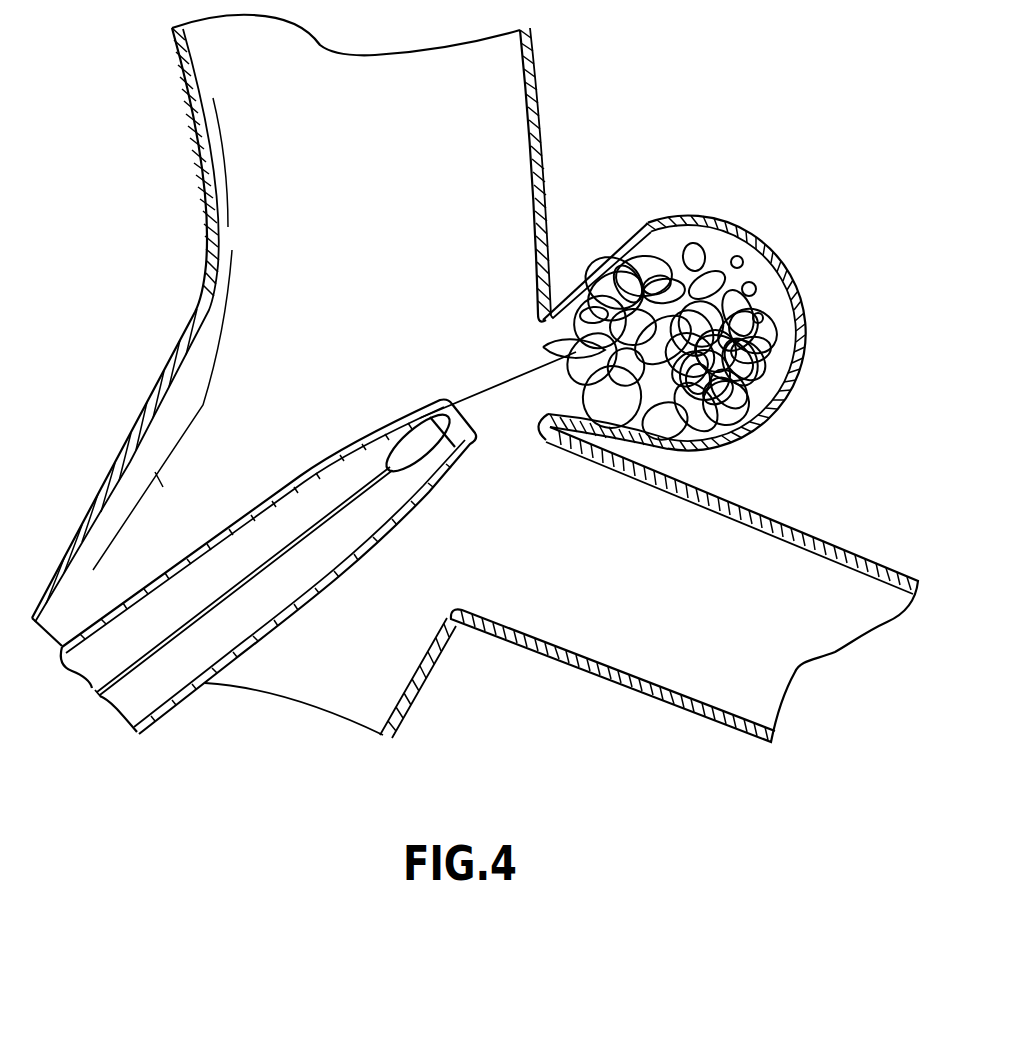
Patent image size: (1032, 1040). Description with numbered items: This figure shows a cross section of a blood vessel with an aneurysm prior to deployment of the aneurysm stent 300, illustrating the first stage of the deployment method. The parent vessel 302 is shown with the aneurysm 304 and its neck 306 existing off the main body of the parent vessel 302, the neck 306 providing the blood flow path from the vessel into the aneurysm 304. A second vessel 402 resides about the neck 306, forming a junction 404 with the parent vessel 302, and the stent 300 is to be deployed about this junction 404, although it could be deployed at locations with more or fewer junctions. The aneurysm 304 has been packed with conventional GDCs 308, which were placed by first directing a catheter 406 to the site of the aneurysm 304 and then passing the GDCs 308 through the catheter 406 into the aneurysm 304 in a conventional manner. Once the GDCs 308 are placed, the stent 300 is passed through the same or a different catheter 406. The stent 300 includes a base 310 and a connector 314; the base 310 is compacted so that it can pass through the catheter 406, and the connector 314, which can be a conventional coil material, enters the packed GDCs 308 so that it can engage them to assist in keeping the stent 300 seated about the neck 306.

The aneurysm stent 300 is at (319, 520).
The parent blood vessel 302 is at (537, 210).
The aneurysm 304 is at (747, 230).
The aneurysm neck 306 is at (510, 312).
The GDCs 308 is at (753, 327).
The base 310 is at (390, 467).
The connector 314 is at (497, 400).
The second vessel 402 is at (742, 513).
The junction 404 is at (535, 480).
The catheter 406 is at (192, 534).